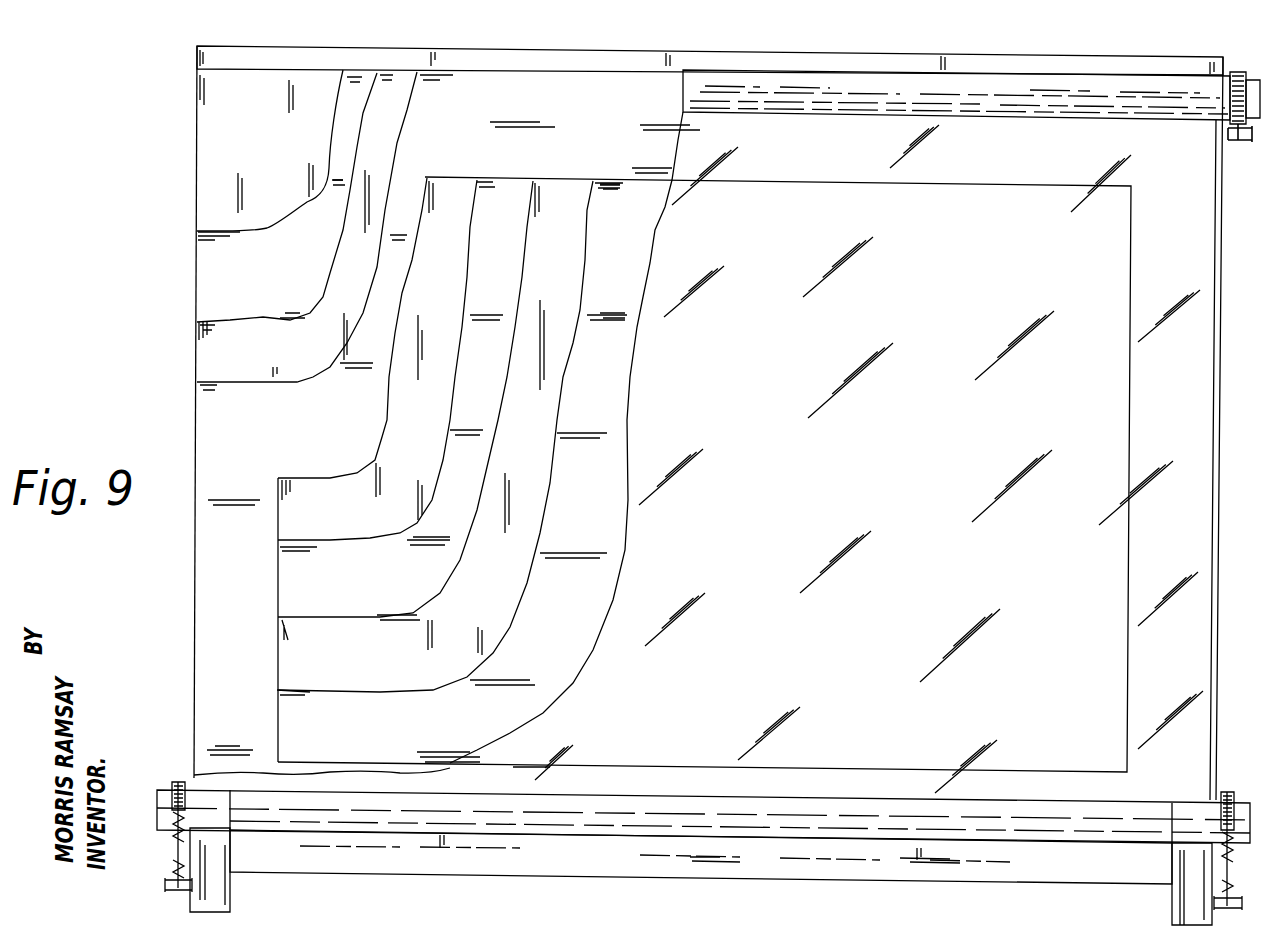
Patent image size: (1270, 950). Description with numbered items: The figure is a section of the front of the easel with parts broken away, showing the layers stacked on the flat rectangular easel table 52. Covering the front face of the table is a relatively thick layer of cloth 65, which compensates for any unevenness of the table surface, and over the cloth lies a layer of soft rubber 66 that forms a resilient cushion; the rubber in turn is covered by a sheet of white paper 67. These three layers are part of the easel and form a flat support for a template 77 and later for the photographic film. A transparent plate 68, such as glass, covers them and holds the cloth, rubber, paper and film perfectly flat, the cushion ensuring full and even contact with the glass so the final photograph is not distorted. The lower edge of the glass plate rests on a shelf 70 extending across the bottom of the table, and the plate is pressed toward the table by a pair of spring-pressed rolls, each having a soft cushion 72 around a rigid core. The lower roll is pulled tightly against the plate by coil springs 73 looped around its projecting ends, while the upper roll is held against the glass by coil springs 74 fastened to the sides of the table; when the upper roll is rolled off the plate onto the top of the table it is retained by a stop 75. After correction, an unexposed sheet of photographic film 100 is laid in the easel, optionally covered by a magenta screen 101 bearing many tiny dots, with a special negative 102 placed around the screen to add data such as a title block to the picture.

The easel table 52 is at (200, 180).
The layer of cloth 65 is at (200, 272).
The layer of soft rubber 66 is at (200, 350).
The sheet of white paper 67 is at (200, 430).
The transparent plate 68 is at (683, 148).
The shelf 70 is at (672, 868).
The soft cushion 72 is at (1100, 108).
The coil springs 73 is at (1228, 790).
The coil springs 74 is at (1228, 141).
The stop 75 is at (197, 58).
The template 77 is at (280, 528).
The sheet of photographic film 100 is at (280, 580).
The magenta screen 101 is at (280, 658).
The special negative 102 is at (280, 725).